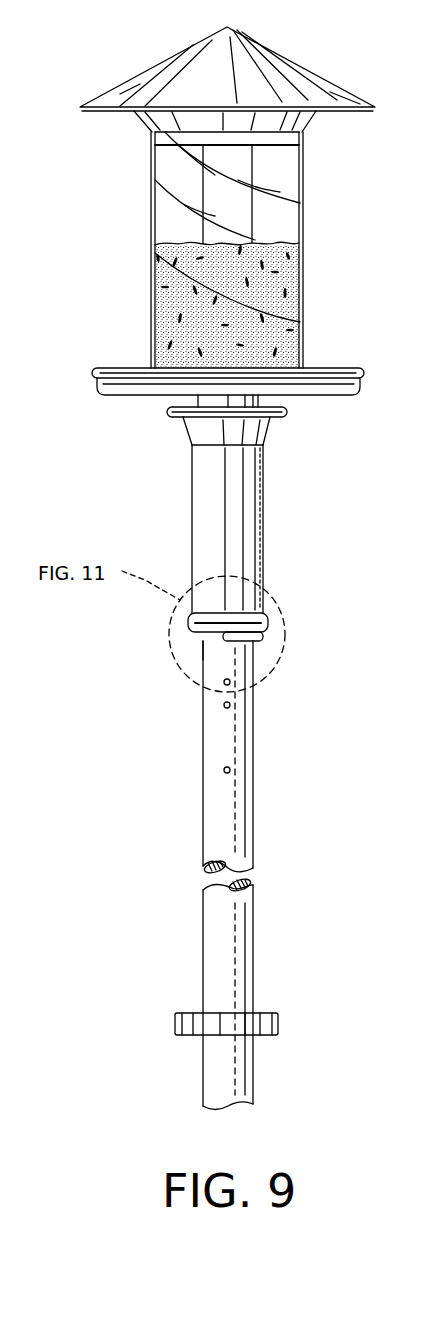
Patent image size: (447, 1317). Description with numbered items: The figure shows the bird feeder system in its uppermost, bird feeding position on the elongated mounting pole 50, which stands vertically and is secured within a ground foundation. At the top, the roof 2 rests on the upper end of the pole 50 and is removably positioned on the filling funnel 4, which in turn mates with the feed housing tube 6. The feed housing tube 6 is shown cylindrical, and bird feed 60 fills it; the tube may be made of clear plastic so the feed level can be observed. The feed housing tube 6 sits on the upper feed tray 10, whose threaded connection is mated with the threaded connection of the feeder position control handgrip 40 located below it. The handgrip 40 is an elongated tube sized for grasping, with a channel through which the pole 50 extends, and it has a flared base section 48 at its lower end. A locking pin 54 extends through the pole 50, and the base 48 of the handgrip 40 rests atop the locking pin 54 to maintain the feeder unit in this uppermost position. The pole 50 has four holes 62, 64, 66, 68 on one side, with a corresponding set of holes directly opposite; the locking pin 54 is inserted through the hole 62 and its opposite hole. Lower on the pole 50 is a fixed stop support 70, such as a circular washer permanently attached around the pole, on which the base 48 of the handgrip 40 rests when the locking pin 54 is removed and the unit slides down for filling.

The roof 2 is at (272, 72).
The filling funnel 4 is at (165, 122).
The feed housing tube 6 is at (305, 123).
The bird feed 60 is at (277, 285).
The upper feed tray 10 is at (337, 368).
The feeder position control handgrip 40 is at (208, 497).
The flared base section 48 is at (260, 622).
The locking pin 54 is at (260, 636).
The hole 62 is at (213, 636).
The hole 64 is at (223, 681).
The hole 66 is at (223, 705).
The hole 68 is at (223, 770).
The elongated mounting pole 50 is at (223, 728).
The fixed stop support 70 is at (175, 1020).